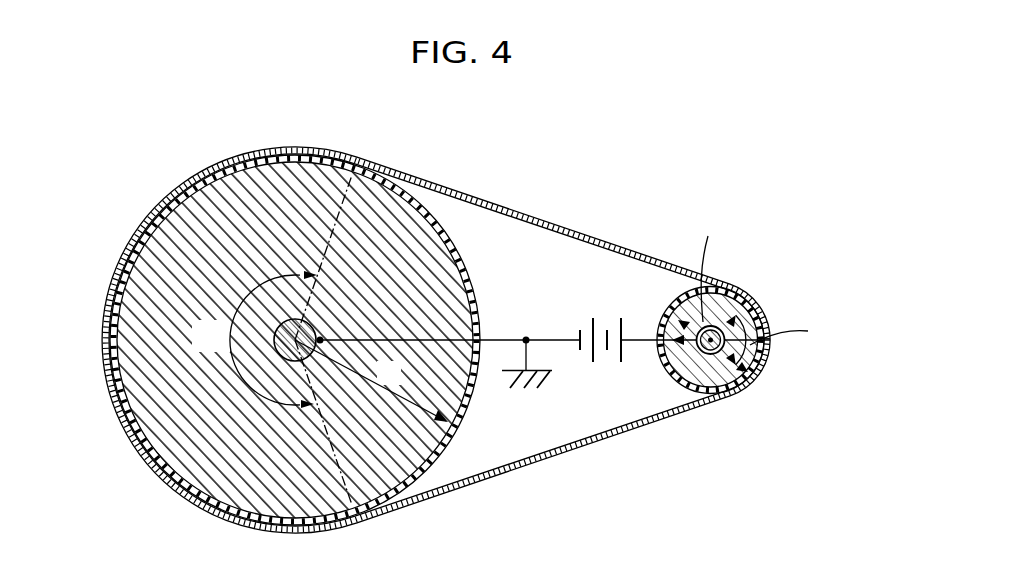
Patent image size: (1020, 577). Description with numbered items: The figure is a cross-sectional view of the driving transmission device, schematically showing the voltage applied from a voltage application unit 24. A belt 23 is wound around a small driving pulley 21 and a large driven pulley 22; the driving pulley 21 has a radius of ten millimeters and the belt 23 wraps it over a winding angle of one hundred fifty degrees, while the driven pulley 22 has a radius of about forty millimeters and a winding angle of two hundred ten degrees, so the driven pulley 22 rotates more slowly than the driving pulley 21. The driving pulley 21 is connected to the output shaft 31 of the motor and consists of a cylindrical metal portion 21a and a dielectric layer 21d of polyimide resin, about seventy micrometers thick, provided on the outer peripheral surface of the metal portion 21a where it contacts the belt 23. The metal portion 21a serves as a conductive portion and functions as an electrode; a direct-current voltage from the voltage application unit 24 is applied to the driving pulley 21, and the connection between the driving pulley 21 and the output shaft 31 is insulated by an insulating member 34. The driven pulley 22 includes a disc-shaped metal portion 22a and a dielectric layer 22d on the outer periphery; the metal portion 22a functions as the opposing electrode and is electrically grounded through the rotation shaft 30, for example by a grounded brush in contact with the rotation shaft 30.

The driving pulley 21 is at (718, 340).
The metal portion 21a is at (670, 304).
The dielectric layer 21d is at (747, 296).
The driven pulley 22 is at (308, 340).
The metal portion 22a is at (430, 242).
The dielectric layer 22d is at (165, 457).
The belt 23 is at (513, 202).
The voltage application unit 24 is at (582, 362).
The rotation shaft 30 is at (282, 322).
The output shaft 31 is at (703, 402).
The insulating member 34 is at (676, 383).